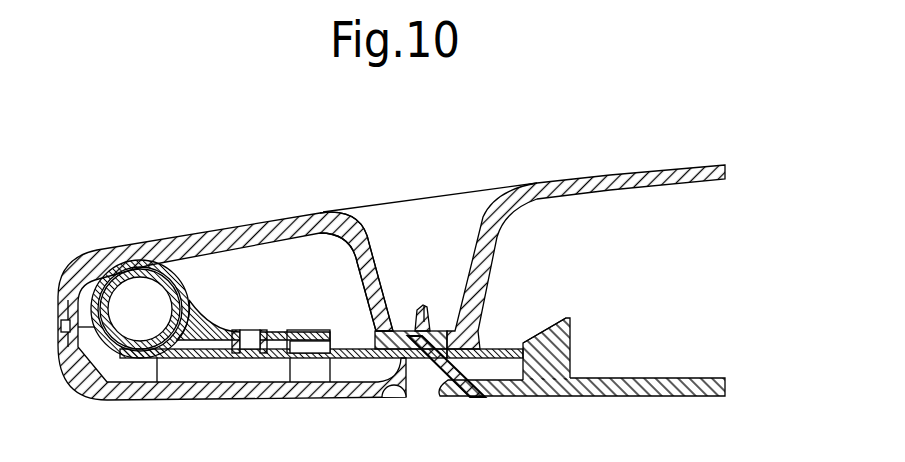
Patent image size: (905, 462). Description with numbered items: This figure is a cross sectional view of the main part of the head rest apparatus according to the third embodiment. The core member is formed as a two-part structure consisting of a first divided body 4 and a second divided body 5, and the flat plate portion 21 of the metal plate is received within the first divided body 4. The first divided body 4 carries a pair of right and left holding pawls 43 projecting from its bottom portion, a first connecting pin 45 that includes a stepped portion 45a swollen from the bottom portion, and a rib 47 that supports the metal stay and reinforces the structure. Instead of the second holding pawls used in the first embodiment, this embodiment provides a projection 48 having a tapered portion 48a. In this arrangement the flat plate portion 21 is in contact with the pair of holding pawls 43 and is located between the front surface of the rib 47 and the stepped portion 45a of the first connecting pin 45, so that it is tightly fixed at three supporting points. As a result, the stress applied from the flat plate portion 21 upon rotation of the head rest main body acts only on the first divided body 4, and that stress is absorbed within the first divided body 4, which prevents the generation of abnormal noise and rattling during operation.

The first divided body 4 is at (628, 398).
The second divided body 5 is at (643, 168).
The flat plate portion 21 is at (486, 364).
The holding pawl 43 is at (318, 330).
The first connecting pin 45 is at (428, 309).
The stepped portion 45a is at (402, 335).
The rib 47 is at (100, 368).
The projection 48 is at (569, 336).
The tapered portion 48a is at (543, 333).